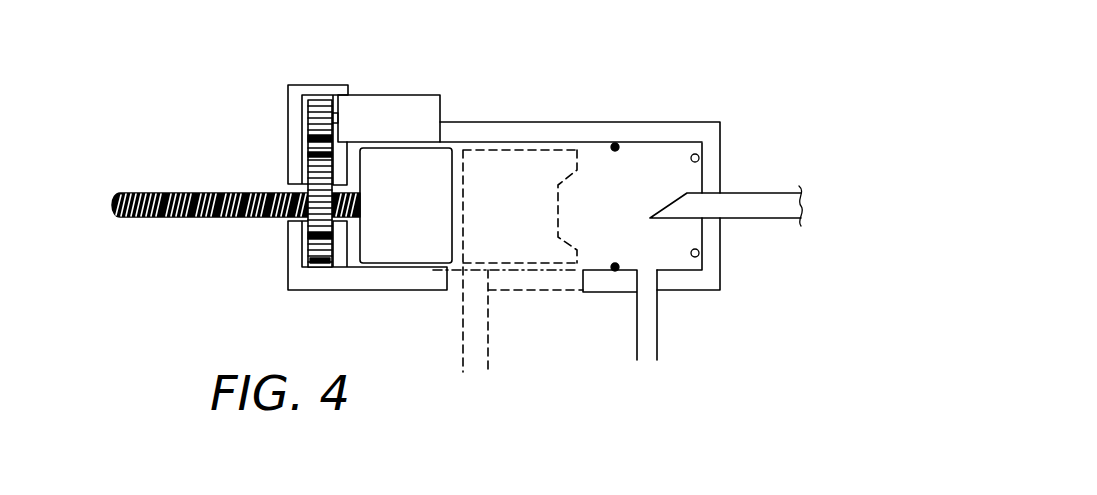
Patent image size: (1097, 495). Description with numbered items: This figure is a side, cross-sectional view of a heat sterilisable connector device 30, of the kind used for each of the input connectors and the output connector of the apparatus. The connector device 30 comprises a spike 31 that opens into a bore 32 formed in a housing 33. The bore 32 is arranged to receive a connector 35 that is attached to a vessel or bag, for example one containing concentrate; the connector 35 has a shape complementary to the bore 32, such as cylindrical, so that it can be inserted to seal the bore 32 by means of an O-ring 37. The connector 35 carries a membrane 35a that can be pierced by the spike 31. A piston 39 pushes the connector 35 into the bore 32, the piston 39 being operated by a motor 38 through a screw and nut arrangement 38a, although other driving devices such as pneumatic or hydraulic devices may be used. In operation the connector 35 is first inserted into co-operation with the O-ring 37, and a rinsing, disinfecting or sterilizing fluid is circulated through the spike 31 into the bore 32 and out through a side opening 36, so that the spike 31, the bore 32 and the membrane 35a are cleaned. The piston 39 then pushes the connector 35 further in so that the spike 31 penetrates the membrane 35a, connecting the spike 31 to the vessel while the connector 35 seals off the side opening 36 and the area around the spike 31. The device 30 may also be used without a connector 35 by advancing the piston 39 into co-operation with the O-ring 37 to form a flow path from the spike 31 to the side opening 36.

The heat sterilisable connector device 30 is at (707, 111).
The spike 31 is at (680, 200).
The bore 32 is at (597, 238).
The housing 33 is at (597, 292).
The connector 35 is at (463, 242).
The membrane 35a is at (556, 218).
The side opening 36 is at (658, 333).
The O-ring 37 is at (618, 143).
The motor 38 is at (398, 95).
The screw and nut arrangement 38a is at (312, 176).
The piston 39 is at (382, 264).